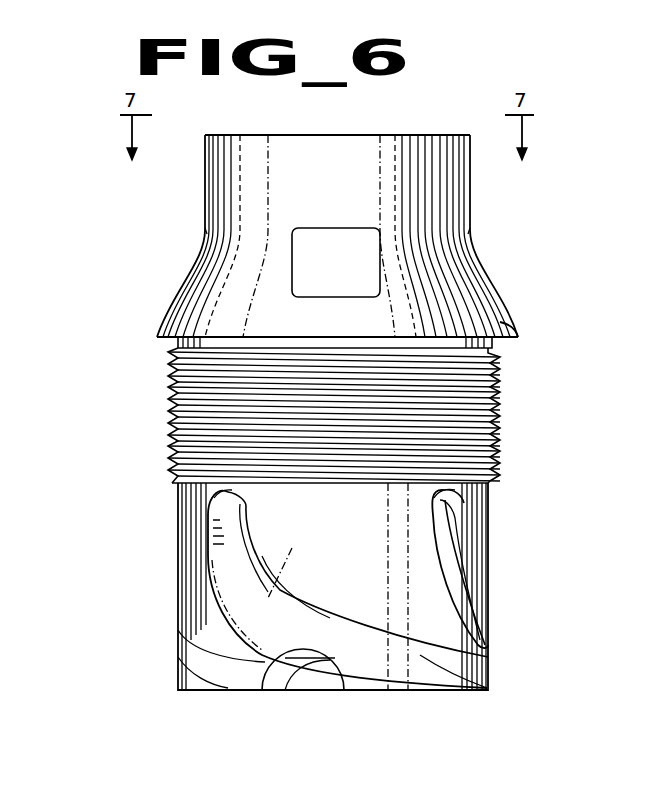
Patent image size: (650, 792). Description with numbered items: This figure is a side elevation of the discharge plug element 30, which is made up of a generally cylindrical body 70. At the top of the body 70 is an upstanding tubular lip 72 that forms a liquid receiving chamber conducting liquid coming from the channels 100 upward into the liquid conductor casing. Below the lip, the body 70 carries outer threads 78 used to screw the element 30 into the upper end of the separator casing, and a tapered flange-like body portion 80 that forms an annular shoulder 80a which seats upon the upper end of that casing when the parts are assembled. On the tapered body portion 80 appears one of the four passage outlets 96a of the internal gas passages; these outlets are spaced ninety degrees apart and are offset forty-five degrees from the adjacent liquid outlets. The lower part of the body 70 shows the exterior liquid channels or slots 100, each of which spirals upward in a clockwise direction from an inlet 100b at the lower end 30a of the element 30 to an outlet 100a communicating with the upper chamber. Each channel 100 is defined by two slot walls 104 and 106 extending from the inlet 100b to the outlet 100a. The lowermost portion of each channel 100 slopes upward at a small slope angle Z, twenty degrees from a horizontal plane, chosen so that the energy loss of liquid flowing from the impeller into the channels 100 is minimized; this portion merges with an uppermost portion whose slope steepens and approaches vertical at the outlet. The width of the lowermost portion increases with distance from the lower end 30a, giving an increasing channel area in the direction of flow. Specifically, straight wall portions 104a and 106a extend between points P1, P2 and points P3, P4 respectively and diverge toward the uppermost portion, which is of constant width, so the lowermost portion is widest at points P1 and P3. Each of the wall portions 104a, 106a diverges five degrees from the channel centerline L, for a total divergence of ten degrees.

The discharge plug element 30 is at (84, 283).
The lower end of element 30a is at (340, 700).
The cylindrical body 70 is at (172, 600).
The upstanding tubular lip 72 is at (314, 158).
The outer threads 78 is at (496, 410).
The tapered flange-like body portion 80 is at (505, 324).
The annular shoulder 80a is at (500, 344).
The passage outlet 96a is at (360, 269).
The exterior liquid channel 100 is at (256, 638).
The channel outlet 100a is at (232, 500).
The channel inlet 100b is at (458, 712).
The slot wall 104 is at (256, 565).
The straight wall portion 104a is at (327, 603).
The slot wall 106 is at (215, 556).
The straight wall portion 106a is at (367, 672).
The centerline of the channel L is at (281, 569).
The point P1 is at (302, 605).
The point P2 is at (395, 650).
The point P3 is at (300, 726).
The point P4 is at (408, 690).
The slope angle Z is at (343, 690).